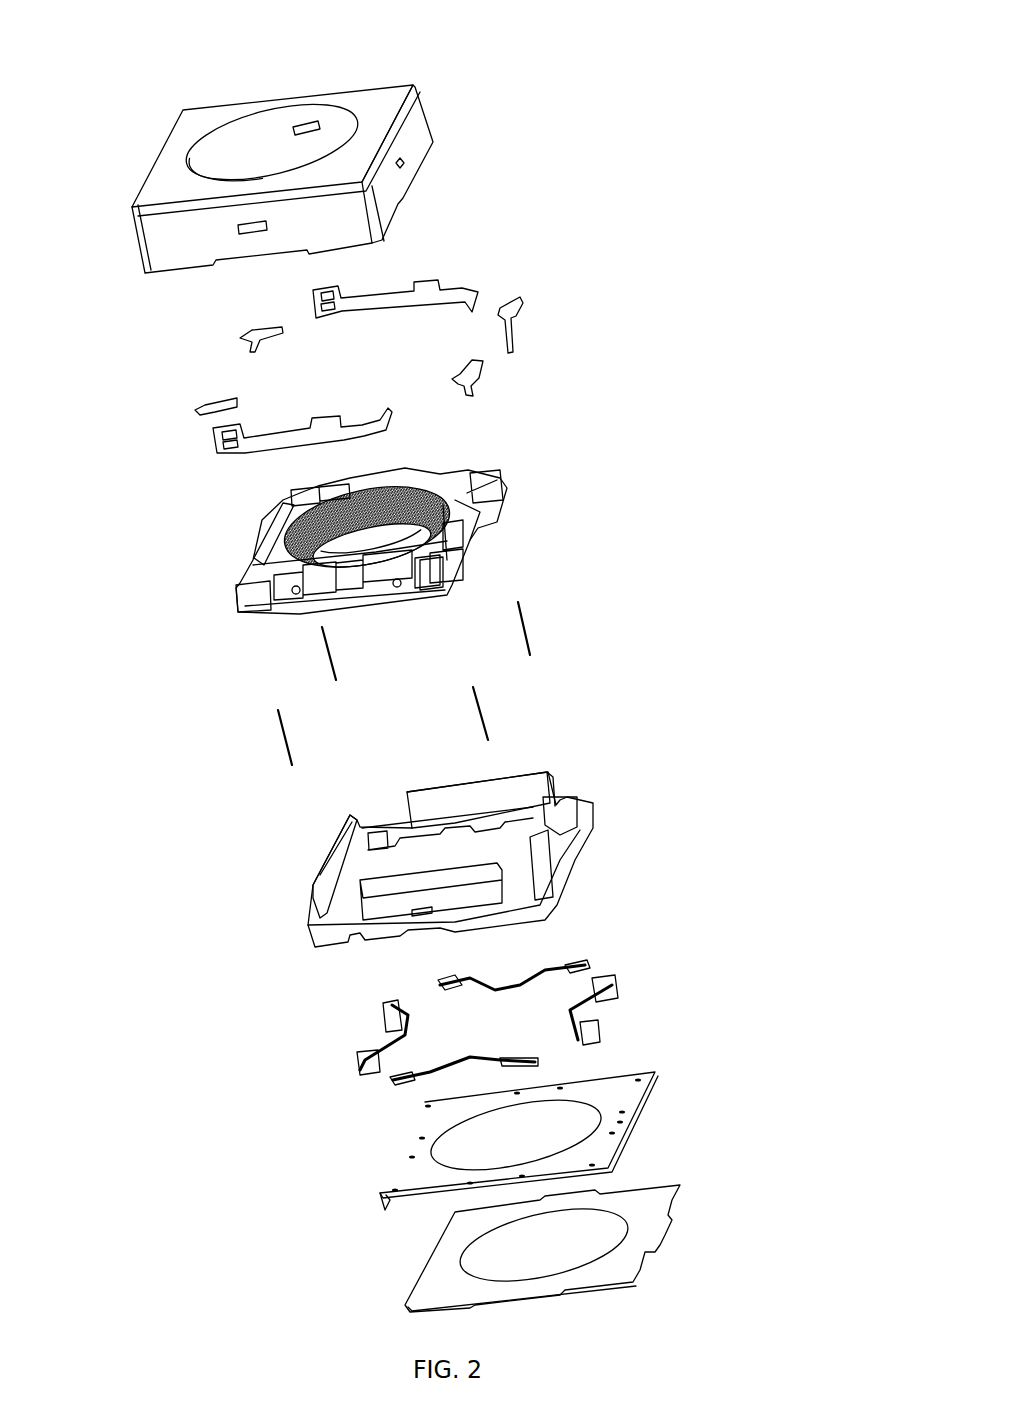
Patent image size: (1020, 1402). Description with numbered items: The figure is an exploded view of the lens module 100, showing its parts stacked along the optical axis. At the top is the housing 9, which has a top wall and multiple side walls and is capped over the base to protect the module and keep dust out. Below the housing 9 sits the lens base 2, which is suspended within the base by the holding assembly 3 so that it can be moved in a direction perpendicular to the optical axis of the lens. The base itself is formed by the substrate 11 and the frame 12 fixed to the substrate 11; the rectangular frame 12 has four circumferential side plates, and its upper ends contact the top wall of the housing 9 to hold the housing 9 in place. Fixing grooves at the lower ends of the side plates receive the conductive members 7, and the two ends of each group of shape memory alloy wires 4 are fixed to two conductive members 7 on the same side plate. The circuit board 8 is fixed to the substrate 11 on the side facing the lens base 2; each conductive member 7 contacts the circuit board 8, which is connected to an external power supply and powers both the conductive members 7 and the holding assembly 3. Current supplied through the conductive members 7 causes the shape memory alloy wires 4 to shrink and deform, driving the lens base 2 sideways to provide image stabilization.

The lens module 100 is at (452, 39).
The housing 9 is at (413, 130).
The lens base 2 is at (483, 517).
The holding assembly 3 is at (528, 628).
The frame 12 is at (593, 812).
The shape memory alloy wires 4 is at (600, 970).
The conductive member 7 is at (382, 1022).
The circuit board 8 is at (638, 1113).
The substrate 11 is at (643, 1220).